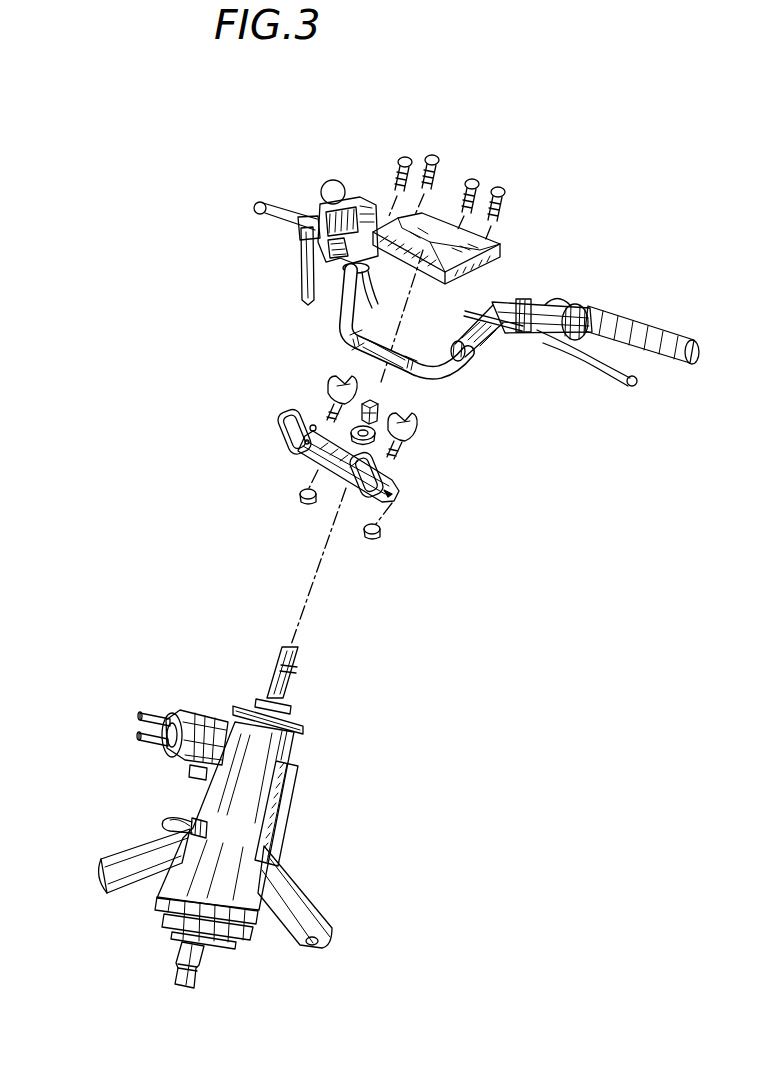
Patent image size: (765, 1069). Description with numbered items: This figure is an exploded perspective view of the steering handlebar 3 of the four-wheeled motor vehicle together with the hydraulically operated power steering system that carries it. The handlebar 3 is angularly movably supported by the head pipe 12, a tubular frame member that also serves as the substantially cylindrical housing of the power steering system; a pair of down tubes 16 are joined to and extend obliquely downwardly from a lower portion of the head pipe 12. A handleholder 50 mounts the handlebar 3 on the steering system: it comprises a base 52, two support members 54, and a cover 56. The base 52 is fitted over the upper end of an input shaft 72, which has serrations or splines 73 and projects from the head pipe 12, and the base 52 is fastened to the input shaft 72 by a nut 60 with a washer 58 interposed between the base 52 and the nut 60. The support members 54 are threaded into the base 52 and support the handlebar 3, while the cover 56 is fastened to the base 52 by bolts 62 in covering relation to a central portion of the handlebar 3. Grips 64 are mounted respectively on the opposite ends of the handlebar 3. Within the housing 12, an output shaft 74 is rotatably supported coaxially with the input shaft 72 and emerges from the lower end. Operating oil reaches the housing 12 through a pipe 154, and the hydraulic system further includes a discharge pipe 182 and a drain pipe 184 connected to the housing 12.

The steering handlebar 3 is at (497, 302).
The head pipe 12 is at (290, 756).
The down tubes 16 is at (130, 854).
The handleholder 50 is at (232, 402).
The base 52 is at (400, 486).
The support members 54 is at (328, 383).
The cover 56 is at (490, 240).
The washer 58 is at (370, 446).
The nut 60 is at (380, 401).
The bolts 62 is at (433, 153).
The grips 64 is at (337, 180).
The input shaft 72 is at (262, 684).
The serrations or splines 73 is at (293, 668).
The output shaft 74 is at (210, 966).
The pipe 154 is at (140, 741).
The discharge pipe 182 is at (155, 716).
The drain pipe 184 is at (188, 821).